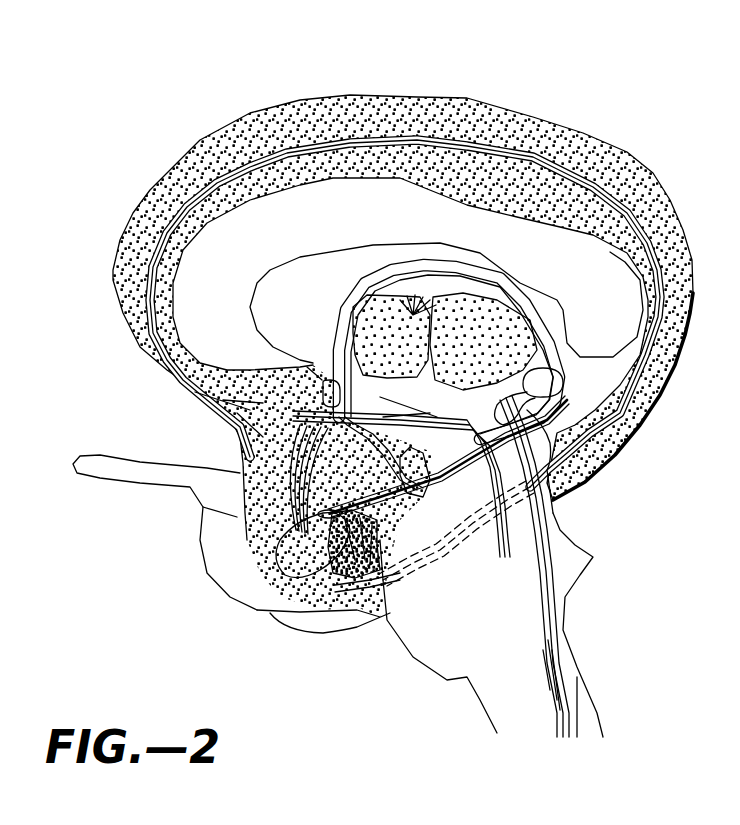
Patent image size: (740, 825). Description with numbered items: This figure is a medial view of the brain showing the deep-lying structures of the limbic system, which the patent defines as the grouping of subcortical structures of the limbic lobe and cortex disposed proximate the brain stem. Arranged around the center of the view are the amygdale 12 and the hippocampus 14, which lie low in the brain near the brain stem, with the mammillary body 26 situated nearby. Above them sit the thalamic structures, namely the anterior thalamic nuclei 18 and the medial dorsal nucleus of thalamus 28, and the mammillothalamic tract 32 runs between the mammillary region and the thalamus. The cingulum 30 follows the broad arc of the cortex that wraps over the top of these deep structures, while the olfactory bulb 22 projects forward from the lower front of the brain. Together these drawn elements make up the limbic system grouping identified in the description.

The amygdale 12 is at (273, 573).
The hippocampus 14 is at (335, 535).
The anterior thalamic nuclei 18 is at (455, 300).
The olfactory bulb 22 is at (100, 480).
The mammillary body 26 is at (417, 490).
The medial dorsal nucleus of thalamus 28 is at (497, 330).
The cingulum 30 is at (560, 150).
The mammillothalamic tract 32 is at (420, 412).